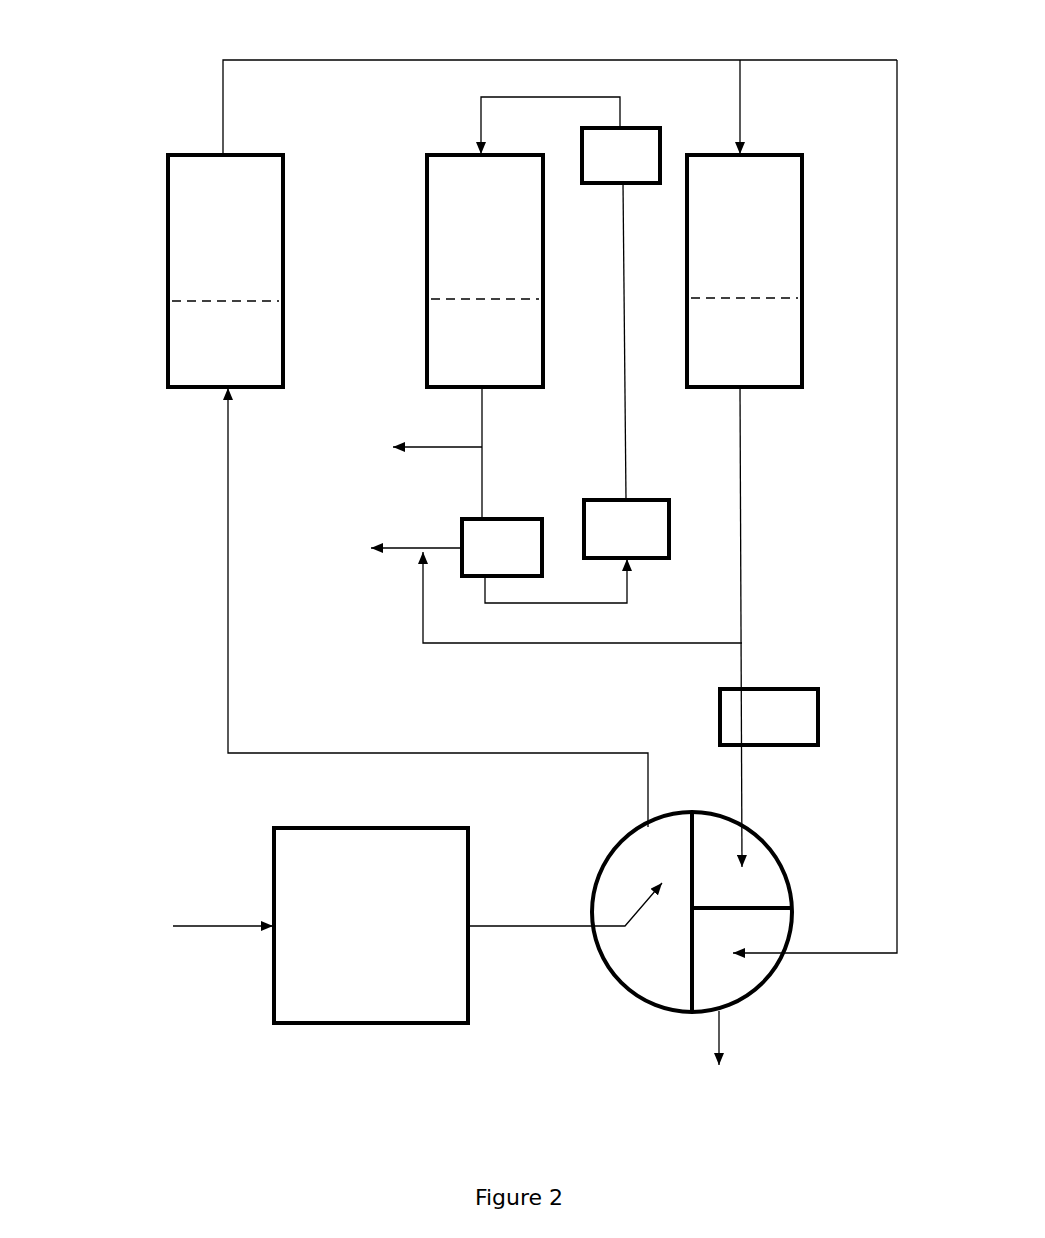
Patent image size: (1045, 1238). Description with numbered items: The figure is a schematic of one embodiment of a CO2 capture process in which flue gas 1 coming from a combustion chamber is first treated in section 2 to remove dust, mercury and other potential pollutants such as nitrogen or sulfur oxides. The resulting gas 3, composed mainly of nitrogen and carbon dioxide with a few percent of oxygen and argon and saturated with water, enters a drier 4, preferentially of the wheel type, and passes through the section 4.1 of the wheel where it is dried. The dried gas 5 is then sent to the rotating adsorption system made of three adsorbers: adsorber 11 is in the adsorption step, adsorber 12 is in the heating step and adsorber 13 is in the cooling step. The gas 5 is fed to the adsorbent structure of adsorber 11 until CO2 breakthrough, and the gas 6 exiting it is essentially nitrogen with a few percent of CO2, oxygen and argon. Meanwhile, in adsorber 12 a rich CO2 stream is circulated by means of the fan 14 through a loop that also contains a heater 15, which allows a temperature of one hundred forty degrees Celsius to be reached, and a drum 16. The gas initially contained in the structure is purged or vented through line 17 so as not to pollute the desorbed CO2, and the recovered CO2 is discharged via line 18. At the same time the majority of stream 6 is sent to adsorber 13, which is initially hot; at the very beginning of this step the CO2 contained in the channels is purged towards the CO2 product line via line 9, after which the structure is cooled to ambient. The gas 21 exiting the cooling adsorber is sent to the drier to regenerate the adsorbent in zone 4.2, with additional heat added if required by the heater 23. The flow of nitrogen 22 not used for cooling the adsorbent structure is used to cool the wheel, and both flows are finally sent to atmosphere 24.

The flue gas 1 is at (198, 926).
The section 2 is at (371, 925).
The gas 3 is at (566, 904).
The drier 4 is at (631, 1001).
The section of the wheel 4.1 is at (650, 860).
The zone 4.2 is at (736, 887).
The gas 5 is at (438, 607).
The gas 6 is at (560, 90).
The line 9 is at (582, 620).
The adsorber 11 is at (166, 247).
The adsorber 12 is at (426, 254).
The adsorber 13 is at (804, 233).
The fan 14 is at (626, 529).
The heater 15 is at (621, 155).
The drum 16 is at (502, 547).
The line 17 is at (413, 450).
The line 18 is at (394, 548).
The gas 21 is at (763, 627).
The flow of nitrogen 22 is at (815, 506).
The heater 23 is at (769, 717).
The atmosphere 24 is at (715, 1057).